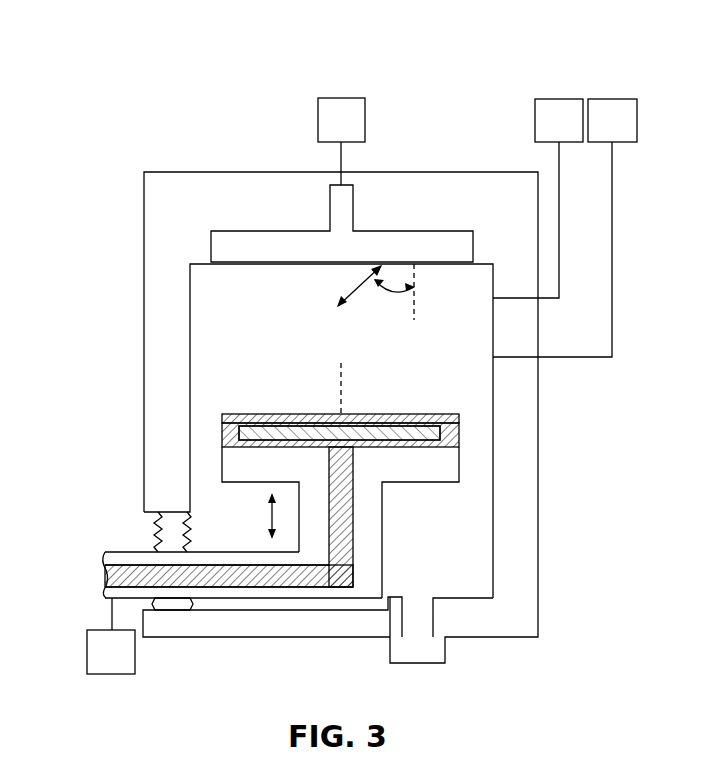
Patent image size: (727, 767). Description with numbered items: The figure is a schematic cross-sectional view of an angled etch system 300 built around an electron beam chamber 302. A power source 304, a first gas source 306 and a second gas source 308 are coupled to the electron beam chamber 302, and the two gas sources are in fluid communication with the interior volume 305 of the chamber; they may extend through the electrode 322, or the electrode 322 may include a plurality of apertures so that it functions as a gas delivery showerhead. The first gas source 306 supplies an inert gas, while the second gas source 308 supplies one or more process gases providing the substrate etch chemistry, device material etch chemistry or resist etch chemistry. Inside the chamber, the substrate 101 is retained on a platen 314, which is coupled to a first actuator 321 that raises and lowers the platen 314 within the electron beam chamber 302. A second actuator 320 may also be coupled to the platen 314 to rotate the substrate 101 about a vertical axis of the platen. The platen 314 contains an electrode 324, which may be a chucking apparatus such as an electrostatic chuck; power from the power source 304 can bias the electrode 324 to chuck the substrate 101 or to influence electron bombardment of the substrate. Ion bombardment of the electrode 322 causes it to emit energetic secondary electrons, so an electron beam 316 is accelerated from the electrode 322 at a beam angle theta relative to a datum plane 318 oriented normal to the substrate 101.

The angled etch system 300 is at (140, 70).
The electron beam chamber 302 is at (492, 638).
The power source 304 is at (361, 135).
The interior volume 305 is at (258, 317).
The first gas source 306 is at (578, 135).
The second gas source 308 is at (631, 135).
The substrate 101 is at (268, 413).
The platen 314 is at (423, 478).
The electron beam 316 is at (347, 288).
The datum plane 318 is at (413, 318).
The second actuator 320 is at (105, 573).
The first actuator 321 is at (130, 667).
The electrode 322 is at (447, 264).
The electrode 324 is at (438, 415).